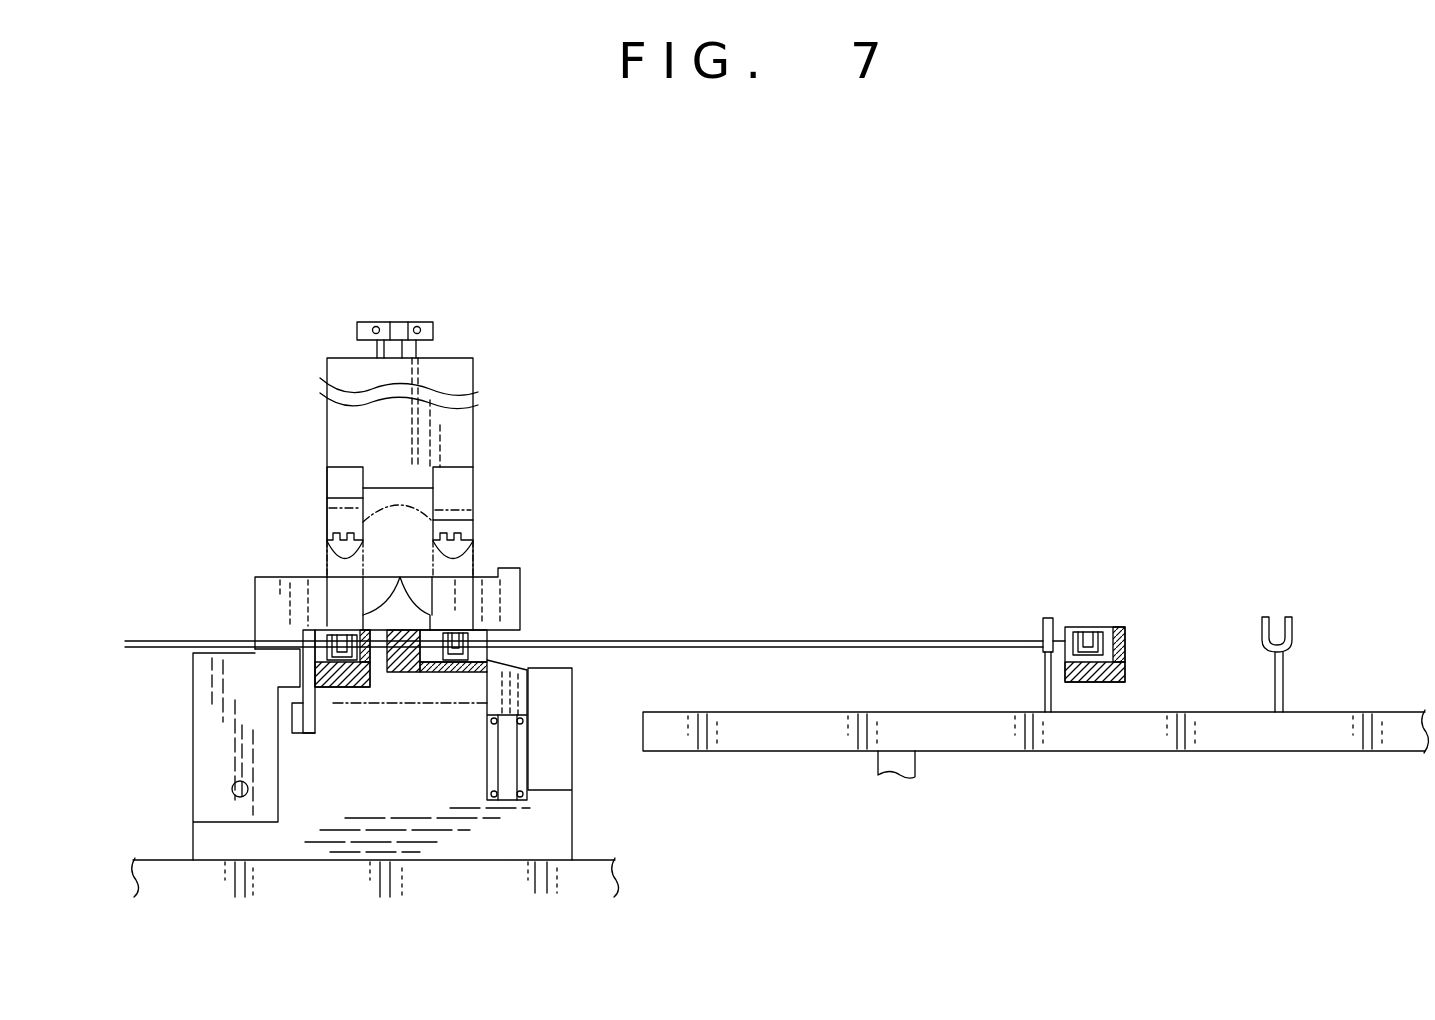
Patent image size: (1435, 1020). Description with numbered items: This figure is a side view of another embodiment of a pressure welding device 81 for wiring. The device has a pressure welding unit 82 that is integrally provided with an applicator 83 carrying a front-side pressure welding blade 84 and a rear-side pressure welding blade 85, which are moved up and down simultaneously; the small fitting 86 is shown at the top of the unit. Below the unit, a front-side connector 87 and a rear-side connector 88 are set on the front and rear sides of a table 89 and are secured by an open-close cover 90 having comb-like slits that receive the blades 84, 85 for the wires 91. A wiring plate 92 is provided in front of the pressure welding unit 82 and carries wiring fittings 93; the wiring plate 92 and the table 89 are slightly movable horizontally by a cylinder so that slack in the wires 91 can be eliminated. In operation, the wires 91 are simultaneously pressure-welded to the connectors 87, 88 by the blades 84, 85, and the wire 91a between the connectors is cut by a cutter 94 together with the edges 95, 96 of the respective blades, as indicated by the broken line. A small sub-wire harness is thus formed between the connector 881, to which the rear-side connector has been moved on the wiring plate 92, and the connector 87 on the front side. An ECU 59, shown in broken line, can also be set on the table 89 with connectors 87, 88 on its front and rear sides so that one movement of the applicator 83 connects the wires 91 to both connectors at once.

The pressure welding device for wiring 81 is at (768, 592).
The pressure welding unit 82 is at (493, 375).
The applicator 83 is at (473, 430).
The front-side pressure welding blade 84 is at (458, 488).
The rear-side pressure welding blade 85 is at (333, 480).
The mounting cap / holder 86 is at (435, 330).
The front-side connector 87 is at (397, 674).
The rear-side connector 88 is at (350, 688).
The connector 881 is at (1117, 627).
The table 89 is at (553, 815).
The open-close cover 90 is at (255, 577).
The wires 91 is at (170, 641).
The wire between the connectors 91a is at (410, 507).
The wiring plate 92 is at (1148, 752).
The wiring fittings 93 is at (1044, 620).
The cutter 94 is at (428, 674).
The edge of pressure welding blade 95 is at (400, 577).
The edge of pressure welding blade 96 is at (327, 541).
The ECU (electronic control unit) 59 is at (335, 703).